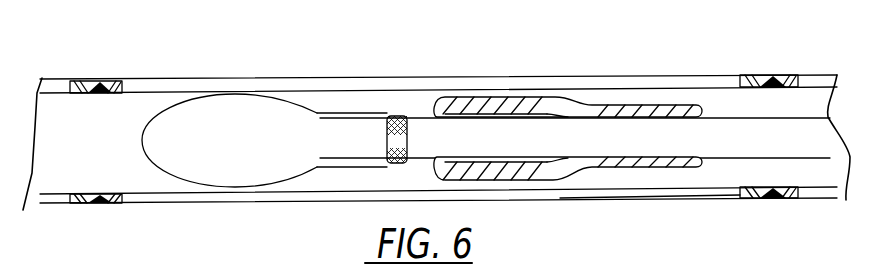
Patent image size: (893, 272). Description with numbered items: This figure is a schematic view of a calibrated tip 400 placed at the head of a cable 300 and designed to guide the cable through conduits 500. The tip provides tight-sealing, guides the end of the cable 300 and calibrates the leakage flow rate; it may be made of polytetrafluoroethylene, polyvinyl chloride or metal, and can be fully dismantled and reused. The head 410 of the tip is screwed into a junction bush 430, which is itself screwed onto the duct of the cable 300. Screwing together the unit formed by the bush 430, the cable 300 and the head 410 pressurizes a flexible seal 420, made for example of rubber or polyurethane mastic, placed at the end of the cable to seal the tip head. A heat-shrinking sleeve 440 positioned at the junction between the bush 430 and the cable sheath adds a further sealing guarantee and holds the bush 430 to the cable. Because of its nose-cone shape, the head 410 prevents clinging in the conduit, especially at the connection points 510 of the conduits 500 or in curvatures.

The cable 300 is at (818, 130).
The calibrated tip 400 is at (550, 140).
The head of the tip 410 is at (263, 150).
The flexible seal 420 is at (397, 116).
The junction bush 430 is at (338, 114).
The heat-shrinking sleeve 440 is at (511, 103).
The conduit 500 is at (652, 193).
The connection points of the conduits 510 is at (134, 31).